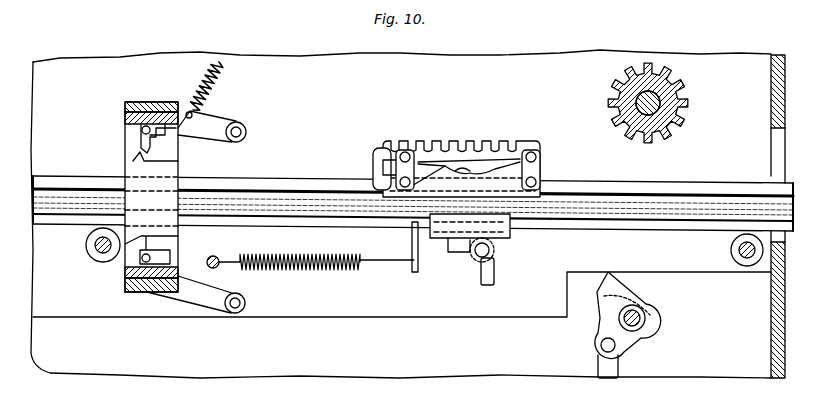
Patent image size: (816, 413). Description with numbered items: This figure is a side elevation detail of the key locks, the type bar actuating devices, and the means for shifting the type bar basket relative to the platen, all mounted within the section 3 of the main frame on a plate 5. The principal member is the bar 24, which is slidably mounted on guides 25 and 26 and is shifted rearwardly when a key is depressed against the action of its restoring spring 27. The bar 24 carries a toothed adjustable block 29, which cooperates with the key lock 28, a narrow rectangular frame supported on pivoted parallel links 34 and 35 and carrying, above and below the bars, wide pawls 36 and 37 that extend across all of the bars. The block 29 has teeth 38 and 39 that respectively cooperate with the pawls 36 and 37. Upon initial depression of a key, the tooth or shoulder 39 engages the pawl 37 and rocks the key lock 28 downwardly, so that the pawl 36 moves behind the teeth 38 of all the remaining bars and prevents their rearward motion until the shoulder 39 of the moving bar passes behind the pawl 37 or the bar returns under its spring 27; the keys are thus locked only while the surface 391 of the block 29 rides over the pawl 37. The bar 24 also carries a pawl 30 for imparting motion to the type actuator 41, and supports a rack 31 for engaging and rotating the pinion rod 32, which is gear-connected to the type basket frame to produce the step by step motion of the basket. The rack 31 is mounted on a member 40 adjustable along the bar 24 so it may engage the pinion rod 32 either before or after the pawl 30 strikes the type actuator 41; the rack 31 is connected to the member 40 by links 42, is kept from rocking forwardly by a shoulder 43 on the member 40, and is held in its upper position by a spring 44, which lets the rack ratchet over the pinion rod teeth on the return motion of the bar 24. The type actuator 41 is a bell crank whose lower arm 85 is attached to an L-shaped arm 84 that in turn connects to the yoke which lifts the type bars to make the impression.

The section of the main frame 3 is at (780, 58).
The base plate 5 is at (541, 378).
The bar 24 is at (248, 186).
The guide 25 is at (88, 256).
The guide 26 is at (731, 251).
The restoring spring 27 is at (340, 268).
The key lock 28 is at (135, 102).
The toothed adjustable block 29 is at (140, 194).
The pawl 30 is at (494, 276).
The rack 31 is at (470, 140).
The pinion rod 32 is at (649, 65).
The pivoted parallel link 34 is at (231, 120).
The pivoted parallel link 35 is at (213, 289).
The wide pawl 36 is at (140, 143).
The wide pawl 37 is at (155, 237).
The tooth 38 is at (138, 155).
The tooth or shoulder 39 is at (146, 234).
The surface of block 391 is at (130, 246).
The member 40 is at (376, 174).
The type actuator 41 is at (608, 280).
The link 42 is at (541, 172).
The shoulder 43 is at (384, 150).
The spring 44 is at (498, 163).
The L-shaped arm 84 is at (598, 366).
The lower arm 85 is at (622, 344).